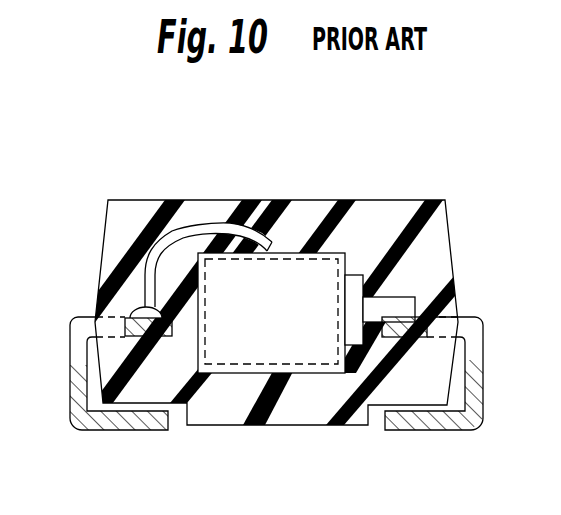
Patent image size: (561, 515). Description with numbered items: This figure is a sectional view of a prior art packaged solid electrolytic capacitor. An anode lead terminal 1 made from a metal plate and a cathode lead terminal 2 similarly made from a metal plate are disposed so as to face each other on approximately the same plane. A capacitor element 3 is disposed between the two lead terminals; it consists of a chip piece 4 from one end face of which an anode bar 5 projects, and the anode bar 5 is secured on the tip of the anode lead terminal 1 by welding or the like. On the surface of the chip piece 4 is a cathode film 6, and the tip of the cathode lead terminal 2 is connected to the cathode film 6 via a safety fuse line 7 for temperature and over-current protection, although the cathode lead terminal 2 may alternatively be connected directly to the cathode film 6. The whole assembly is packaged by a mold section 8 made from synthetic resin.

The anode lead terminal 1 is at (485, 395).
The cathode lead terminal 2 is at (70, 383).
The capacitor element 3 is at (302, 245).
The chip piece 4 is at (276, 345).
The anode bar 5 is at (405, 305).
The cathode film 6 is at (290, 245).
The safety fuse line 7 is at (203, 223).
The mold section 8 is at (440, 280).